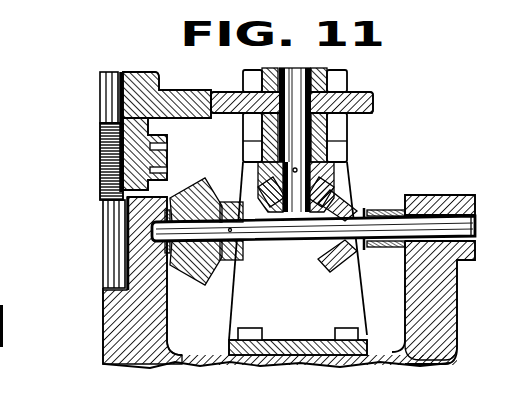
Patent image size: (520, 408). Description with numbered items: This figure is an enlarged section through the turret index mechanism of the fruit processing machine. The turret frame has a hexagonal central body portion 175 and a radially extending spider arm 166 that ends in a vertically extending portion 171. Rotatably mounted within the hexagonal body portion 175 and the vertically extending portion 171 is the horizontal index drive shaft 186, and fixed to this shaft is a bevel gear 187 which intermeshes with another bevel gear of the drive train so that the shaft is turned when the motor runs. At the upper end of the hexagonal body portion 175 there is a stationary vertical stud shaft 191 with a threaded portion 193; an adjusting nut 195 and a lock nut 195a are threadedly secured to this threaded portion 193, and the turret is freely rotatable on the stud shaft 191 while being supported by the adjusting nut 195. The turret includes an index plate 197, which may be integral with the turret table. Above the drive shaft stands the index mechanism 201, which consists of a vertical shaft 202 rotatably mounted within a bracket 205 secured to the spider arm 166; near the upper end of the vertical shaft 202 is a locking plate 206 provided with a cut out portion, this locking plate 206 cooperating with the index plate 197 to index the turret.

The spider arm 166 is at (258, 367).
The vertically extending portion 171 is at (457, 306).
The hexagonal central body portion 175 is at (168, 317).
The index drive shaft 186 is at (282, 236).
The bevel gear 187 is at (229, 268).
The stationary vertical stud shaft 191 is at (103, 237).
The threaded portion 193 is at (101, 165).
The adjusting nut 195 is at (165, 138).
The lock nut 195a is at (168, 162).
The index plate 197 is at (205, 74).
The index mechanism 201 is at (388, 99).
The vertical shaft 202 is at (287, 70).
The bracket 205 is at (328, 77).
The locking plate 206 is at (370, 113).